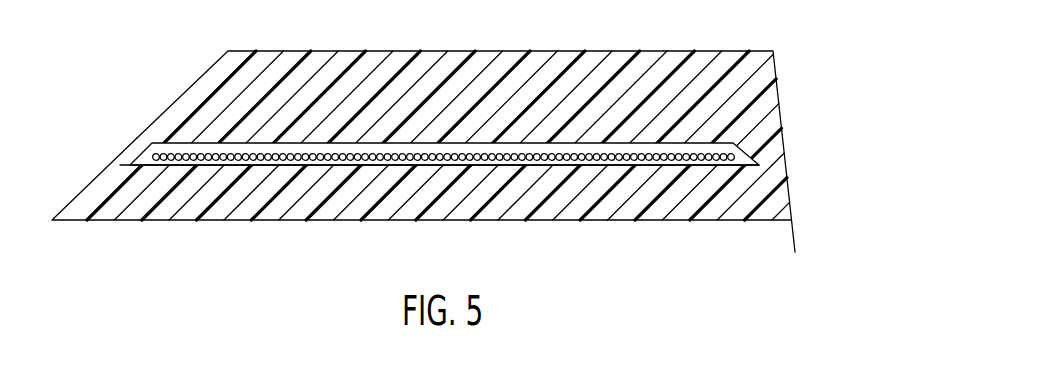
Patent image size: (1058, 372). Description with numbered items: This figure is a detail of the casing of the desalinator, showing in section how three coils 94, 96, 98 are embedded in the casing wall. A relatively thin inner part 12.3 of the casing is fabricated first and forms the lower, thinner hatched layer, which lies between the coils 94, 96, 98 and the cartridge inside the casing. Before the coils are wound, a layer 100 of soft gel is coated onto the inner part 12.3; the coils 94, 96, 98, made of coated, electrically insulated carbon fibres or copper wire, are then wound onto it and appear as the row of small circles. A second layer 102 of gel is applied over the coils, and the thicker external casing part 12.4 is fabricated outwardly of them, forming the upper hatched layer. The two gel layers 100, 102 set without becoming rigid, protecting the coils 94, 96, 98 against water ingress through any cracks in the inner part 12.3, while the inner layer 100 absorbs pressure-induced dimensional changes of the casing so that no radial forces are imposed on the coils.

The inner part 12.3 is at (576, 196).
The external casing part 12.4 is at (733, 123).
The second layer of gel 102 is at (527, 145).
The layer of soft gel 100 is at (337, 166).
The coil 94 is at (218, 161).
The coil 96 is at (332, 210).
The coil 98 is at (457, 210).